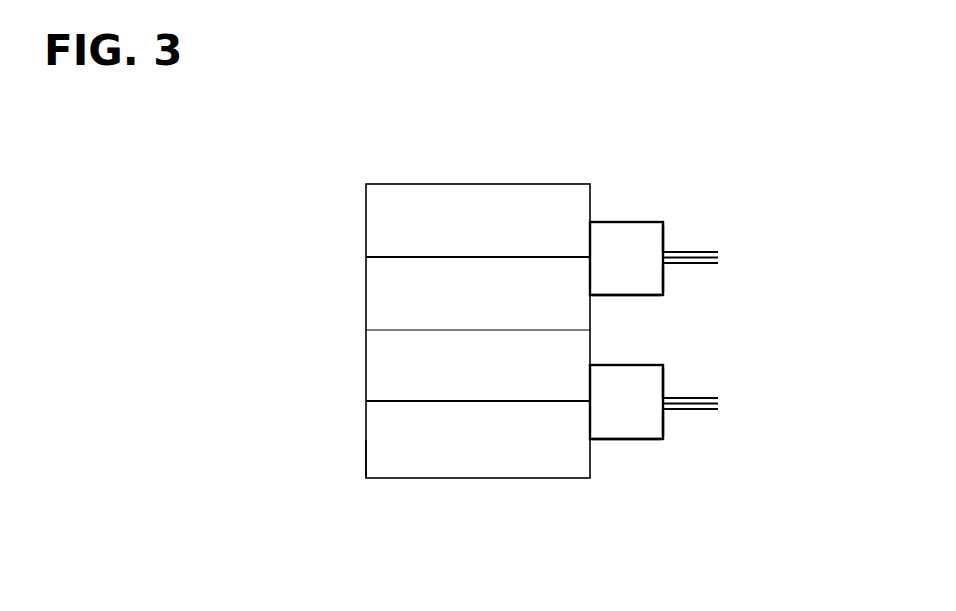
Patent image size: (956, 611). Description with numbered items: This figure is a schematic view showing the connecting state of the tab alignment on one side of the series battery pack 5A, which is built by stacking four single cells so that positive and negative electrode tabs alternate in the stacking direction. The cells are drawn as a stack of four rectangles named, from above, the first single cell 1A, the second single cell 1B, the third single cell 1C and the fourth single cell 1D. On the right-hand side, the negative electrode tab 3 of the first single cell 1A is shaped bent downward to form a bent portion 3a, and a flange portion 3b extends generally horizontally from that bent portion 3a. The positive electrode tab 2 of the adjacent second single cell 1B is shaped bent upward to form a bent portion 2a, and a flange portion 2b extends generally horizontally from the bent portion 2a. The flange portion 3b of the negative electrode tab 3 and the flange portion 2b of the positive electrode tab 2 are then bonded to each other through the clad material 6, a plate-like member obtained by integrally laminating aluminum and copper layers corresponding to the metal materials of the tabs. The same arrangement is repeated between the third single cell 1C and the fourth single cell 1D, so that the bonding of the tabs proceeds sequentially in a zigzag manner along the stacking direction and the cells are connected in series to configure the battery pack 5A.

The battery pack 5A is at (300, 174).
The first single cell 1A is at (382, 228).
The second single cell 1B is at (385, 300).
The third single cell 1C is at (385, 368).
The fourth single cell 1D is at (382, 440).
The negative electrode tab 3 is at (645, 222).
The bent portion 3a is at (664, 233).
The flange portion 3b is at (705, 250).
The clad material 6 is at (719, 257).
The flange portion 2b is at (706, 265).
The bent portion 2a is at (664, 278).
The positive electrode tab 2 is at (645, 295).